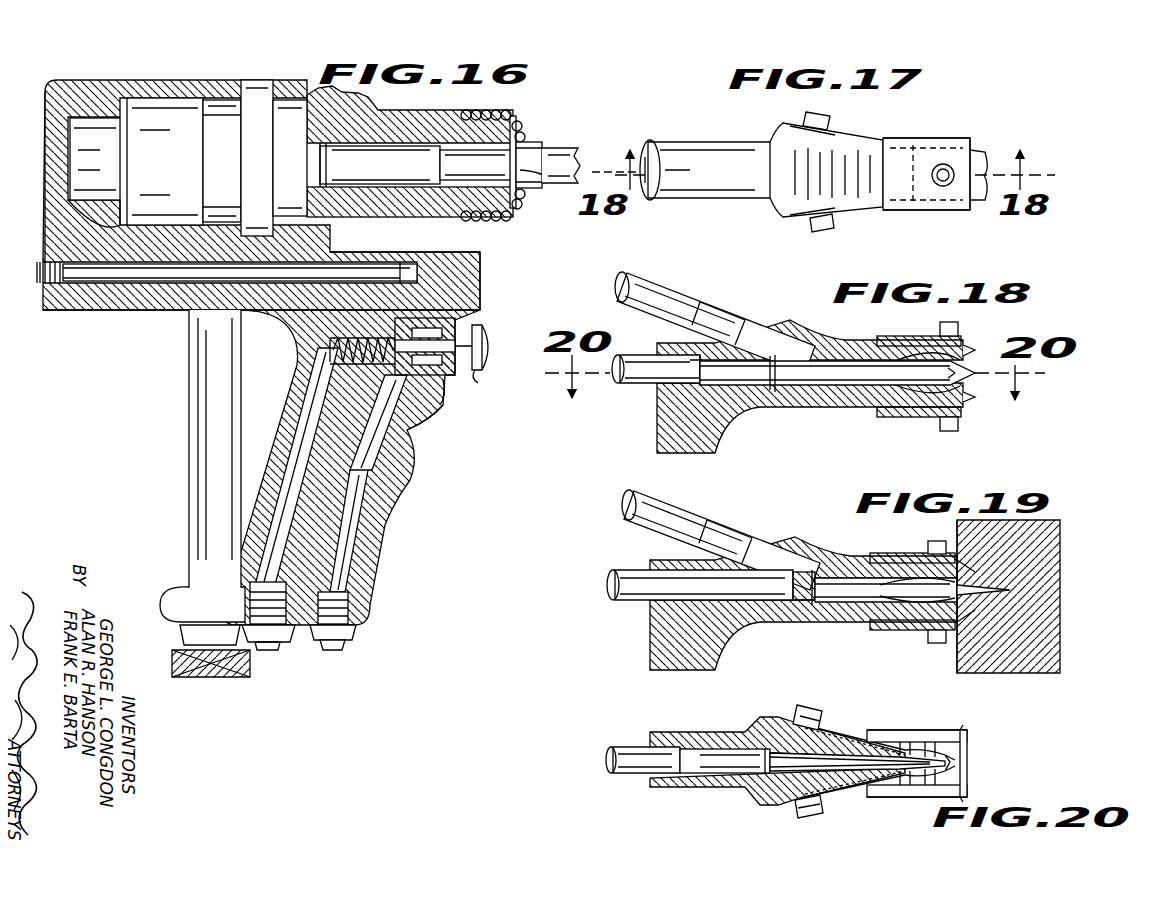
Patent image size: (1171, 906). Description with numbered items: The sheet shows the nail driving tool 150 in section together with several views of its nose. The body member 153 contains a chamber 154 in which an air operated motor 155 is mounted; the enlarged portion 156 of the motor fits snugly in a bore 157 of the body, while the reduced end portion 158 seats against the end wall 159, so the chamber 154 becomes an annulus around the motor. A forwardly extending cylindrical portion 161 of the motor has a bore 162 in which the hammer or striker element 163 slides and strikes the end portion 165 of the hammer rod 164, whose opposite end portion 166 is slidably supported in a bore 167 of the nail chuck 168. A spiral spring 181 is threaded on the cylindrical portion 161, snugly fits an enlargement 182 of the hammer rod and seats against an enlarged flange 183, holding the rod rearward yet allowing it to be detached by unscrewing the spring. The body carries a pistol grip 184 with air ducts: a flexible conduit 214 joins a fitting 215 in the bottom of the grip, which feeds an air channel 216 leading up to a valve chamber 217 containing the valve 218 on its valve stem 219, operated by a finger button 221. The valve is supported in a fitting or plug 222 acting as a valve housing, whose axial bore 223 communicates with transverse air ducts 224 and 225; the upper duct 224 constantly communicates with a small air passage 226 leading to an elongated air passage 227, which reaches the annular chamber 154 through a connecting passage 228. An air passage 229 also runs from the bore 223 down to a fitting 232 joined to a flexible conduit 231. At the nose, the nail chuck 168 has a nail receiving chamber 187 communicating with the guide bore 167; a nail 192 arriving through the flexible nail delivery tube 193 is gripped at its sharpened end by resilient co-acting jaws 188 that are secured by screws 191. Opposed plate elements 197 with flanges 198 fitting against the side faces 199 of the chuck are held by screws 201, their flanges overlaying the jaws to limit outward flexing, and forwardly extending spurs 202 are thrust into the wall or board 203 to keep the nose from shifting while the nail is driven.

In FIG. 16, the nail driving tool 150 is at (120, 78).
In FIG. 16, the body member 153 is at (110, 300).
In FIG. 16, the chamber 154 is at (92, 212).
In FIG. 16, the air operated motor 155 is at (165, 161).
In FIG. 16, the enlarged portion 156 is at (188, 112).
In FIG. 16, the bore 157 is at (160, 100).
In FIG. 16, the reduced end portion 158 is at (95, 159).
In FIG. 16, the end wall 159 is at (58, 155).
In FIG. 16, the cylindrical portion 161 is at (396, 120).
In FIG. 16, the bore 162 is at (342, 200).
In FIG. 16, the hammer or striker element 163 is at (380, 165).
In FIG. 16, the hammer rod 164 is at (570, 150).
In FIG. 18, the hammer rod 164 is at (622, 386).
In FIG. 19, the hammer rod 164 is at (634, 588).
In FIG. 20, the hammer rod 164 is at (626, 766).
In FIG. 16, the end portion 165 is at (462, 158).
In FIG. 18, the opposite end portion 166 is at (682, 368).
In FIG. 18, the bore 167 is at (690, 392).
In FIG. 17, the nail chuck 168 is at (777, 218).
In FIG. 18, the nail chuck 168 is at (737, 418).
In FIG. 19, the nail chuck 168 is at (774, 546).
In FIG. 20, the nail chuck 168 is at (740, 730).
In FIG. 16, the spiral spring 181 is at (518, 116).
In FIG. 16, the enlargement 182 is at (545, 142).
In FIG. 16, the enlarged flange 183 is at (537, 175).
In FIG. 16, the pistol grip 184 is at (418, 470).
In FIG. 18, the nail receiving chamber 187 is at (806, 390).
In FIG. 20, the nail receiving chamber 187 is at (722, 787).
In FIG. 20, the resilient co-acting jaws 188 is at (930, 752).
In FIG. 17, the screws 191 is at (815, 122).
In FIG. 20, the screws 191 is at (810, 713).
In FIG. 18, the nail 192 is at (815, 370).
In FIG. 19, the nail 192 is at (828, 585).
In FIG. 20, the nail 192 is at (760, 778).
In FIG. 16, the flexible nail delivery tube 193 is at (200, 437).
In FIG. 17, the flexible nail delivery tube 193 is at (660, 146).
In FIG. 18, the flexible nail delivery tube 193 is at (662, 296).
In FIG. 19, the flexible nail delivery tube 193 is at (636, 528).
In FIG. 17, the plate elements 197 is at (930, 155).
In FIG. 18, the plate elements 197 is at (898, 338).
In FIG. 19, the plate elements 197 is at (890, 554).
In FIG. 20, the plate elements 197 is at (885, 728).
In FIG. 17, the flanges 198 is at (895, 138).
In FIG. 20, the flanges 198 is at (897, 730).
In FIG. 20, the side faces 199 is at (848, 730).
In FIG. 17, the screws 201 is at (950, 168).
In FIG. 18, the screws 201 is at (952, 328).
In FIG. 19, the screws 201 is at (940, 541).
In FIG. 17, the spurs 202 is at (994, 167).
In FIG. 18, the spurs 202 is at (976, 350).
In FIG. 19, the spurs 202 is at (988, 610).
In FIG. 20, the spurs 202 is at (968, 733).
In FIG. 19, the wall or board 203 is at (957, 655).
In FIG. 16, the flexible conduit 214 is at (272, 660).
In FIG. 16, the fitting 215 is at (286, 640).
In FIG. 16, the air channel 216 is at (290, 458).
In FIG. 16, the valve chamber 217 is at (348, 360).
In FIG. 16, the valve 218 is at (422, 412).
In FIG. 16, the valve stem 219 is at (478, 380).
In FIG. 16, the finger button 221 is at (492, 338).
In FIG. 16, the fitting or plug 222 is at (458, 325).
In FIG. 16, the axial bore 223 is at (450, 380).
In FIG. 16, the air duct 224 is at (481, 264).
In FIG. 16, the air duct 225 is at (436, 398).
In FIG. 16, the air passage 226 is at (394, 262).
In FIG. 16, the elongated air passage 227 is at (186, 290).
In FIG. 16, the connecting passage 228 is at (95, 243).
In FIG. 16, the air passage 229 is at (372, 505).
In FIG. 16, the flexible conduit 231 is at (345, 650).
In FIG. 16, the fitting 232 is at (358, 632).